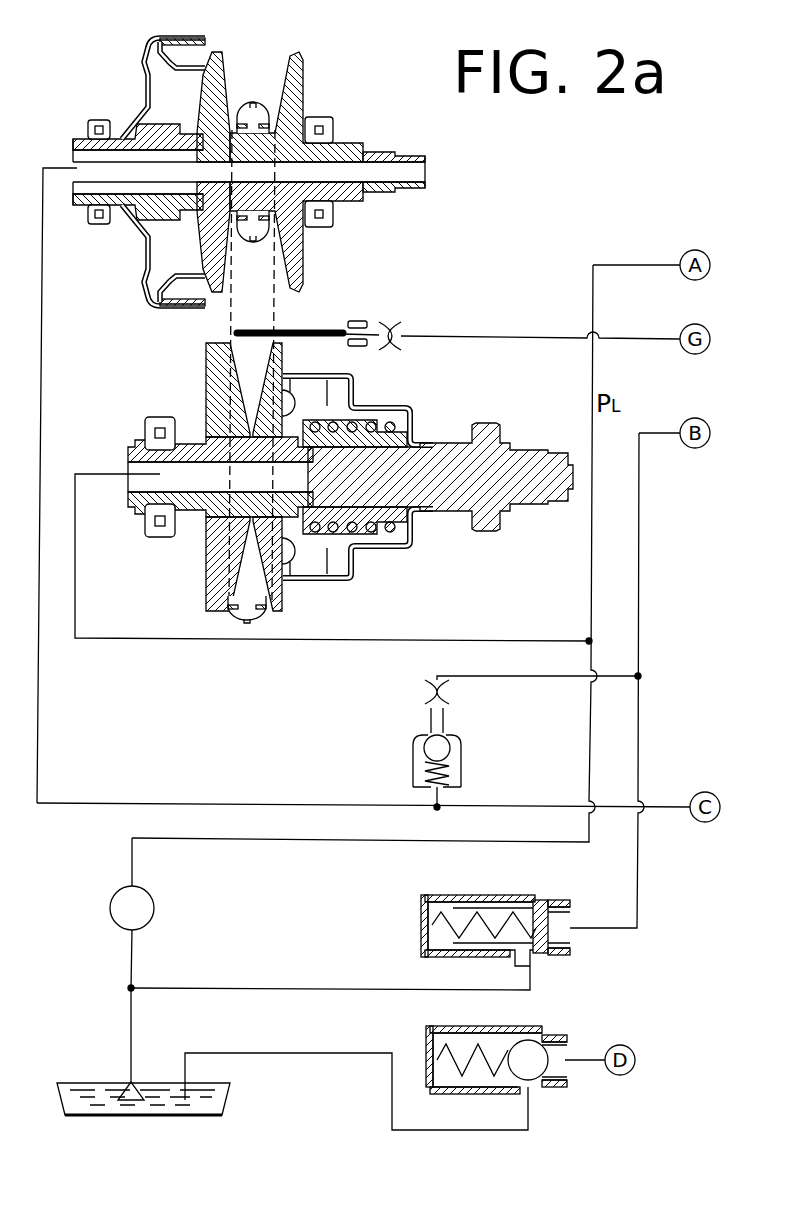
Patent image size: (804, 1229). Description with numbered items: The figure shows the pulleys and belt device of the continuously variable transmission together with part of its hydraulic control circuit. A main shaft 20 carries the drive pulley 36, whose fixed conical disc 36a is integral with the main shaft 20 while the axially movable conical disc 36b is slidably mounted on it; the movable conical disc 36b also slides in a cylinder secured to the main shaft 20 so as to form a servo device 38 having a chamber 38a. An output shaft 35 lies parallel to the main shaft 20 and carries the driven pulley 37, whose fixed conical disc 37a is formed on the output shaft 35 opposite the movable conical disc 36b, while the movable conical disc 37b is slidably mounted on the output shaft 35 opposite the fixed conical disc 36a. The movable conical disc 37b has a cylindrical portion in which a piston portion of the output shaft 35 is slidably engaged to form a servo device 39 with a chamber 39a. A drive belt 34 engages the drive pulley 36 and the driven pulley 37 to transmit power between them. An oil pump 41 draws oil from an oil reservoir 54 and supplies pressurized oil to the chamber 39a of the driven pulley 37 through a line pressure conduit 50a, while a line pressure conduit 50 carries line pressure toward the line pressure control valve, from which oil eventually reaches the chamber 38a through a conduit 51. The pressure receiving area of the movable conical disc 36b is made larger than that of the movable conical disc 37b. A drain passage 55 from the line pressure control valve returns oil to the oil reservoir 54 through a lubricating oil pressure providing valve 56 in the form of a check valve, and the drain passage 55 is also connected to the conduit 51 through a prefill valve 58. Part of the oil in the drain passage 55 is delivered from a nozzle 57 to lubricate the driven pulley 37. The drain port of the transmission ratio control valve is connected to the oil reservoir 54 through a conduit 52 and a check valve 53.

The main shaft 20 is at (353, 146).
The drive belt 34 is at (264, 106).
The output shaft 35 is at (498, 470).
The drive pulley 36 is at (231, 151).
The fixed conical disc 36a is at (303, 92).
The movable conical disc 36b is at (243, 36).
The driven pulley 37 is at (235, 488).
The fixed conical disc 37a is at (219, 566).
The movable conical disc 37b is at (280, 598).
The servo device 38 is at (151, 158).
The chamber 38a is at (153, 86).
The servo device 39 is at (355, 378).
The chamber 39a is at (383, 530).
The oil pump 41 is at (153, 920).
The line pressure conduit 50 is at (594, 266).
The line pressure conduit 50a is at (457, 642).
The conduit 51 is at (678, 799).
The conduit 52 is at (580, 1057).
The check valve 53 is at (491, 1010).
The oil reservoir 54 is at (222, 1112).
The drain passage 55 is at (639, 890).
The lubricating oil pressure providing valve 56 is at (495, 873).
The nozzle 57 is at (307, 330).
The prefill valve 58 is at (461, 770).